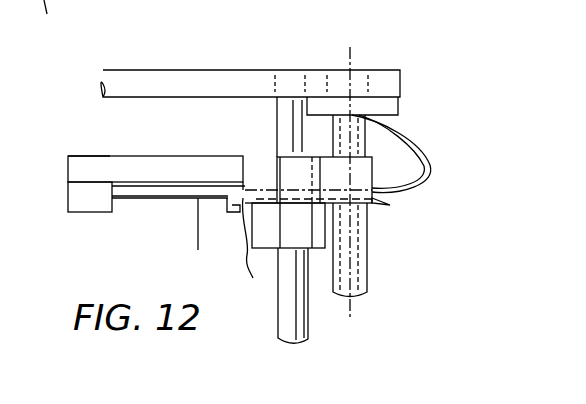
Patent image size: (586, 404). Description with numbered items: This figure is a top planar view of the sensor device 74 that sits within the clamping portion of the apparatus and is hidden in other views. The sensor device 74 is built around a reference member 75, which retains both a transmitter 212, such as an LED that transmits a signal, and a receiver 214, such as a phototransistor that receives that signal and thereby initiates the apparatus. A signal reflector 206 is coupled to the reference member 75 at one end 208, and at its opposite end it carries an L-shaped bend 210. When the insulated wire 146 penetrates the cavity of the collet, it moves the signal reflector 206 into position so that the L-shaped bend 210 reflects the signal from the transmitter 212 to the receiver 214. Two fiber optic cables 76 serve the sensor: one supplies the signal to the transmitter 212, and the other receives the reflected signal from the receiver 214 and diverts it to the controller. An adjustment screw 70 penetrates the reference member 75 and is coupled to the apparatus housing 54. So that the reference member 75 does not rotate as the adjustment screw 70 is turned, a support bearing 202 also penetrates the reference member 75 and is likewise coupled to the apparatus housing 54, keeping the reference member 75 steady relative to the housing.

The apparatus housing 54 is at (385, 80).
The adjustment screw 70 is at (360, 238).
The sensor device 74 is at (157, 154).
The reference member 75 is at (90, 167).
The fiber optic cables 76 is at (430, 168).
The insulated wire 146 is at (198, 228).
The support bearing 202 is at (302, 317).
The signal reflector 206 is at (141, 200).
The end 208 is at (116, 200).
The L-shaped bend 210 is at (226, 209).
The transmitter 212 is at (240, 187).
The receiver 214 is at (256, 250).